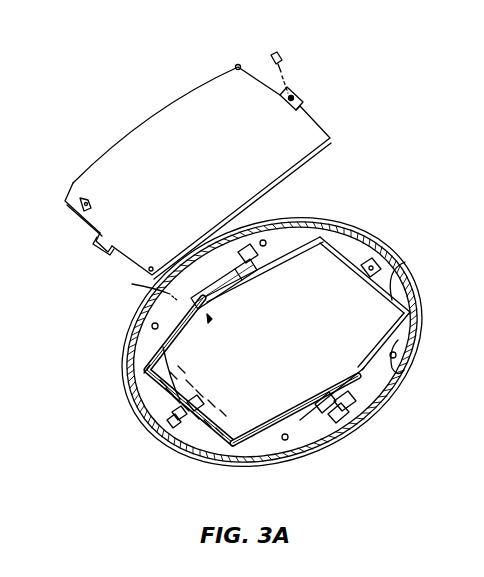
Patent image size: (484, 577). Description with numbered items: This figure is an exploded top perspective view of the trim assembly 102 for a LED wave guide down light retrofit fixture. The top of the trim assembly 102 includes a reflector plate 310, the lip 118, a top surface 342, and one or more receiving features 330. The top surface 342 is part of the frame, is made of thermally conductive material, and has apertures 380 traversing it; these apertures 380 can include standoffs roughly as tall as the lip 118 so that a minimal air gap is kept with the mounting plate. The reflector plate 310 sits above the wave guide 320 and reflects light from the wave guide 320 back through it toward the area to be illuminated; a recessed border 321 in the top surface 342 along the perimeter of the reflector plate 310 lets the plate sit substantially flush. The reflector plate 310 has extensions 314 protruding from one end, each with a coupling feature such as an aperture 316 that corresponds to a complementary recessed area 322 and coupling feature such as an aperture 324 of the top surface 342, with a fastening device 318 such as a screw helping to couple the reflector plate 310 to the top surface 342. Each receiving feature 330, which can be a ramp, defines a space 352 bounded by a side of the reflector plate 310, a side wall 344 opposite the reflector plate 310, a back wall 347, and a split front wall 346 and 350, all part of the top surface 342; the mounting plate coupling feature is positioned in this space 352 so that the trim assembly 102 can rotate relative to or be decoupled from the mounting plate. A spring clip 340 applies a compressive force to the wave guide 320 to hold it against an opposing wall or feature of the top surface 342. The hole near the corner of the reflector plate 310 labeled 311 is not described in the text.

The trim assembly 102 is at (116, 70).
The reflector plate 310 is at (213, 180).
The holes 311 is at (236, 63).
The extension 314 is at (310, 108).
The aperture 316 is at (302, 96).
The fastening device 318 is at (275, 50).
The lip 118 is at (392, 258).
The recessed border 321 is at (412, 277).
The apertures 380 is at (397, 352).
The wave guide 320 is at (340, 309).
The aperture 324 is at (150, 355).
The receiving feature 330 is at (200, 322).
The side wall 344 is at (222, 262).
The back wall 347 is at (240, 272).
The space 352 is at (210, 318).
The split front wall portion 350 is at (352, 372).
The split front wall portion 346 is at (346, 404).
The spring clip 340 is at (200, 398).
The top surface 342 is at (150, 386).
The recessed area 322 is at (168, 430).